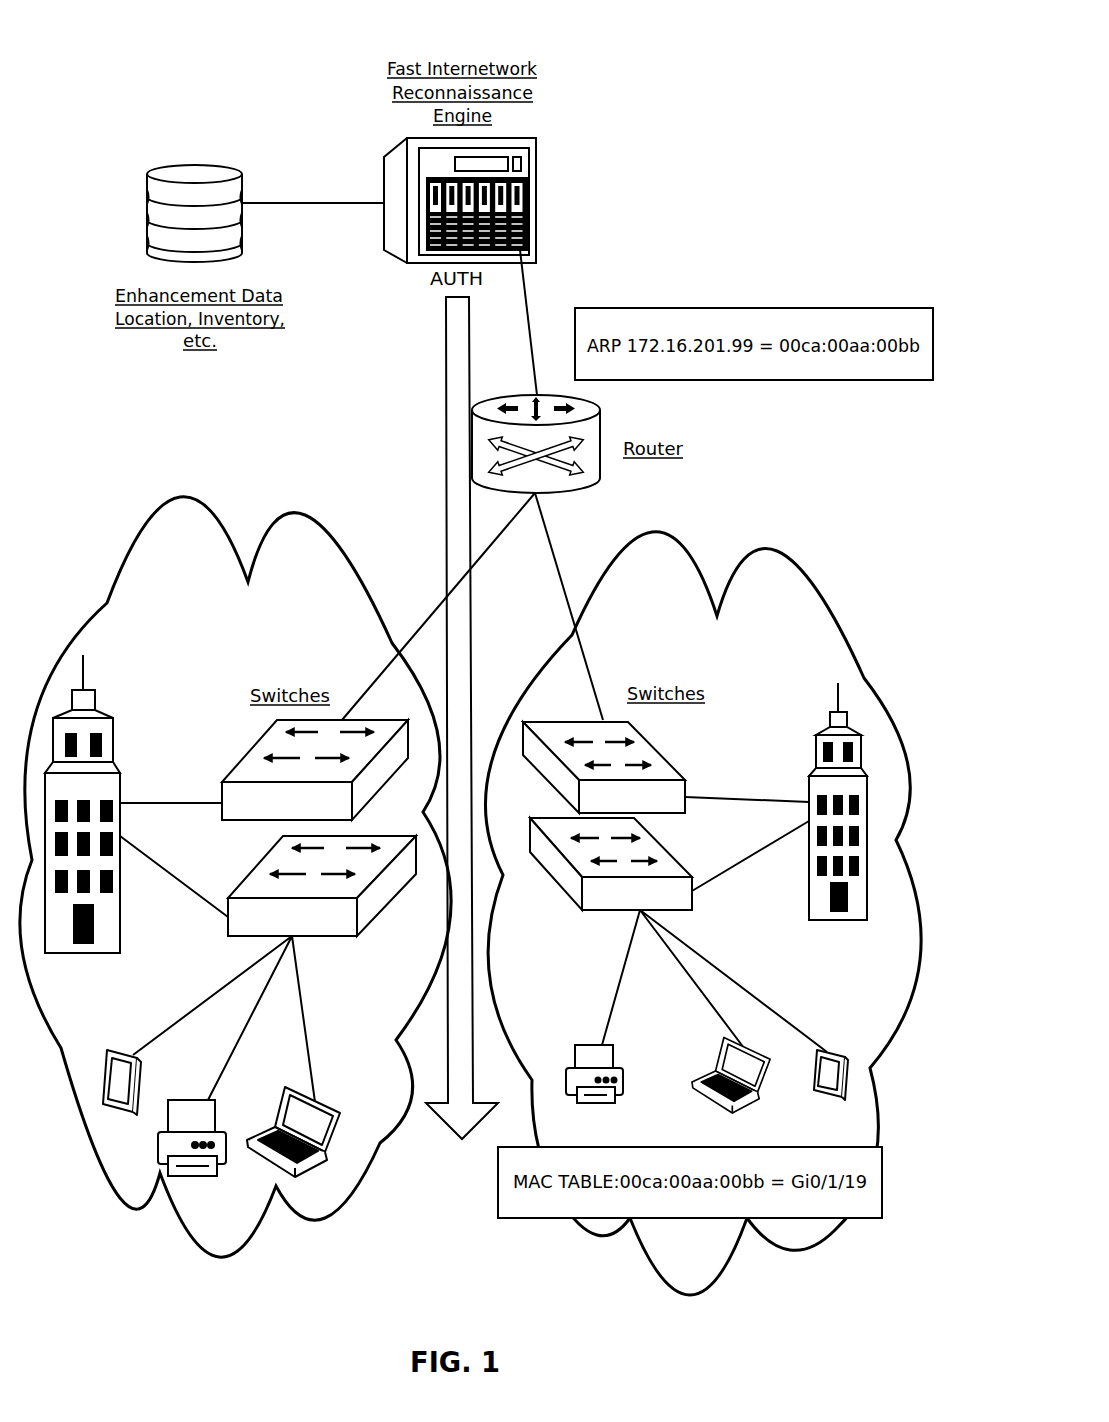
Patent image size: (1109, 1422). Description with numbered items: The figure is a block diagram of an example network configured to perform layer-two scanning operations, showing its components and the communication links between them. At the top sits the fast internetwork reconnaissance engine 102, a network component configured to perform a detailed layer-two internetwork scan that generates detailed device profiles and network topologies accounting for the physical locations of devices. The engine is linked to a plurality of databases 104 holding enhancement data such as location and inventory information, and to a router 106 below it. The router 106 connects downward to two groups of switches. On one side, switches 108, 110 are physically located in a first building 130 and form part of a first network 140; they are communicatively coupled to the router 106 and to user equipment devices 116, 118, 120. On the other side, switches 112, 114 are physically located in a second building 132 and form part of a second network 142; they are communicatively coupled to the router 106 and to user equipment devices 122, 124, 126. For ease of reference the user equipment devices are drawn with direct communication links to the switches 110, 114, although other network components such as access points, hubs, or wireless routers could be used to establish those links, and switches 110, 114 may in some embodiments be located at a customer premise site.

The fast internetwork reconnaissance engine 102 is at (546, 128).
The databases 104 is at (247, 159).
The router 106 is at (511, 397).
The switch 108 is at (240, 760).
The switch 110 is at (243, 879).
The switch 112 is at (685, 757).
The switch 114 is at (695, 861).
The user equipment device 116 is at (107, 1049).
The user equipment device 118 is at (173, 1100).
The user equipment device 120 is at (329, 1110).
The user equipment device 122 is at (585, 1045).
The user equipment device 124 is at (752, 1053).
The user equipment device 126 is at (826, 1050).
The first building 130 is at (108, 685).
The second building 132 is at (816, 731).
The first network 140 is at (181, 497).
The second network 142 is at (782, 549).